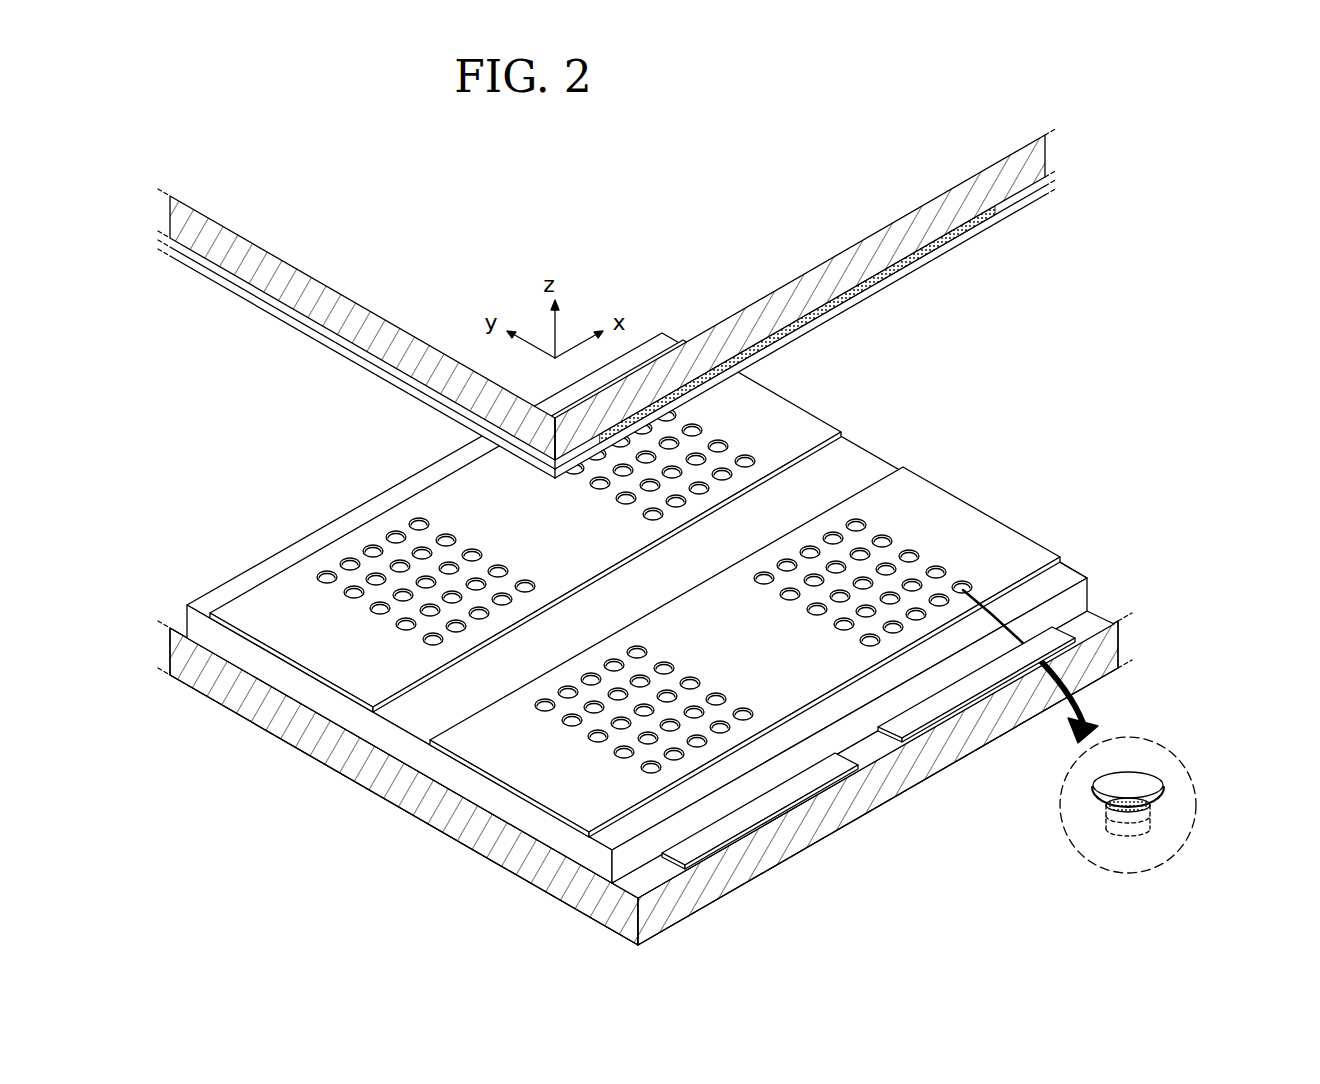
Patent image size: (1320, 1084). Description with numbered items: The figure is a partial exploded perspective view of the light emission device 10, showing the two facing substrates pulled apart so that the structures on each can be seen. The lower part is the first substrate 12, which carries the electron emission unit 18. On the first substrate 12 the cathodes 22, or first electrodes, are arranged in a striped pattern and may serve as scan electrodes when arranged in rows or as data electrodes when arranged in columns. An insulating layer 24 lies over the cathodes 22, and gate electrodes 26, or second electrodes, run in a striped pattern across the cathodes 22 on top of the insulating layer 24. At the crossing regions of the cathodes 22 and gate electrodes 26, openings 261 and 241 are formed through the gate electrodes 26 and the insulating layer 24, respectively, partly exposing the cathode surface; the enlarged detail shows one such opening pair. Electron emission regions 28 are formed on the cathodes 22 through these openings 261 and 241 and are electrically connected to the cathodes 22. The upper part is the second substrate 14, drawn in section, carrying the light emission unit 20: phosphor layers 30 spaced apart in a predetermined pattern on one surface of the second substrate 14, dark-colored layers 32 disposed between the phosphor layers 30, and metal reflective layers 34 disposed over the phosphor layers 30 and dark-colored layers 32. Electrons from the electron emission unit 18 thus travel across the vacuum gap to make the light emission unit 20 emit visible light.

The light emission device 10 is at (689, 206).
The first substrate 12 is at (547, 883).
The second substrate 14 is at (253, 268).
The electron emission unit 18 is at (702, 639).
The light emission unit 20 is at (610, 303).
The cathodes 22 is at (835, 770).
The insulating layer 24 is at (1073, 597).
The gate electrodes 26 is at (470, 747).
The electron emission regions 28 is at (782, 633).
The phosphor layers 30 is at (940, 253).
The dark-colored layers 32 is at (810, 333).
The metal reflective layers 34 is at (1000, 222).
The opening of the insulating layer 241 is at (1138, 792).
The opening of the gate electrode 261 is at (1128, 778).